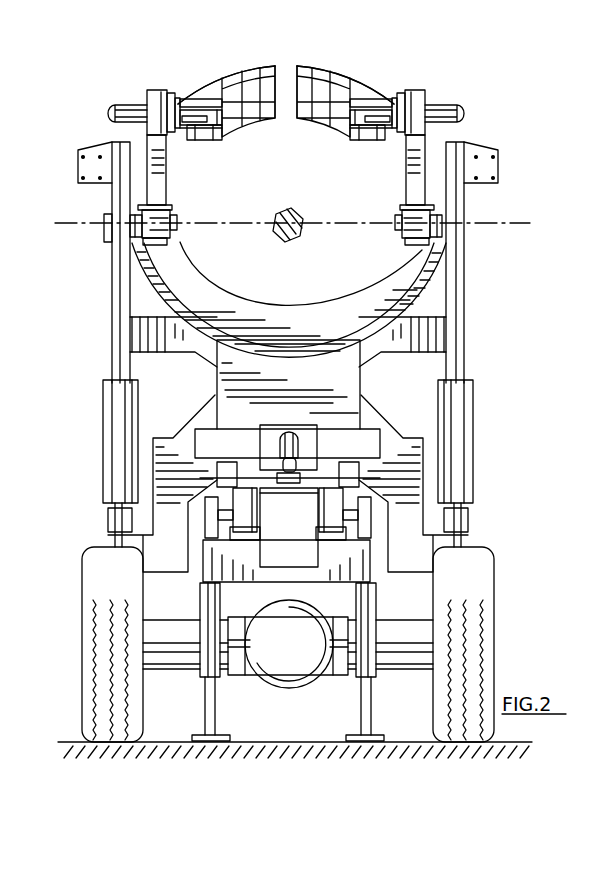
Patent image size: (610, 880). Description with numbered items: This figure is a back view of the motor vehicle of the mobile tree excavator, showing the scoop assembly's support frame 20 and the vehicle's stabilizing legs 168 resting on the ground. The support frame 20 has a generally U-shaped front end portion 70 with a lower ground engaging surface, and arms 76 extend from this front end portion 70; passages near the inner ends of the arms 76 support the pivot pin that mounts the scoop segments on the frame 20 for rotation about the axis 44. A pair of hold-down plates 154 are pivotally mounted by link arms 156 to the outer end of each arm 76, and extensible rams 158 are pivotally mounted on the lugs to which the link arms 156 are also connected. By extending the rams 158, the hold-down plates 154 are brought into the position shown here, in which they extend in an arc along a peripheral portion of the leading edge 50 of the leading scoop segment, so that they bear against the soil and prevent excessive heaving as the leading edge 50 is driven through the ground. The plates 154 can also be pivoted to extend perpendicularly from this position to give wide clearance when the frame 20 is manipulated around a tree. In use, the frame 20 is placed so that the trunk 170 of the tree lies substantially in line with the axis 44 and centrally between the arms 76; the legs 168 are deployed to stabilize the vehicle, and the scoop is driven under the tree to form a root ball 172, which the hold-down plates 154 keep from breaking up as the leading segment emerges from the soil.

The support frame 20 is at (410, 278).
The center line 44 is at (228, 222).
The leading edge 50 is at (280, 68).
The front end portion 70 is at (353, 300).
The arms 76 is at (153, 90).
The hold-down plates 154 is at (232, 80).
The link arms 156 is at (188, 99).
The extensible rams 158 is at (122, 105).
The stabilizing legs 168 is at (217, 720).
The trunk 170 is at (300, 213).
The root ball 172 is at (290, 83).